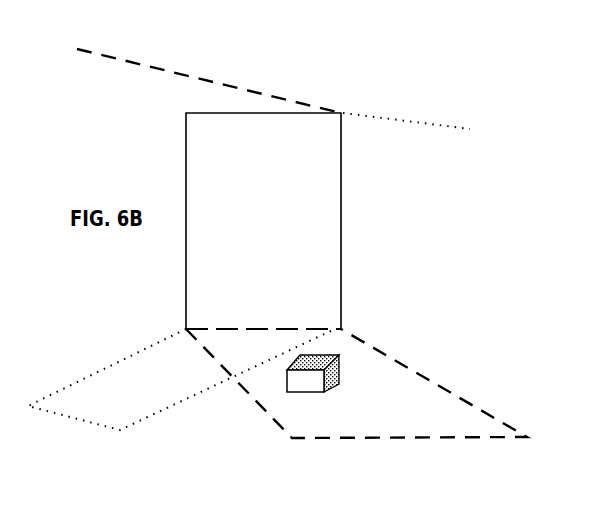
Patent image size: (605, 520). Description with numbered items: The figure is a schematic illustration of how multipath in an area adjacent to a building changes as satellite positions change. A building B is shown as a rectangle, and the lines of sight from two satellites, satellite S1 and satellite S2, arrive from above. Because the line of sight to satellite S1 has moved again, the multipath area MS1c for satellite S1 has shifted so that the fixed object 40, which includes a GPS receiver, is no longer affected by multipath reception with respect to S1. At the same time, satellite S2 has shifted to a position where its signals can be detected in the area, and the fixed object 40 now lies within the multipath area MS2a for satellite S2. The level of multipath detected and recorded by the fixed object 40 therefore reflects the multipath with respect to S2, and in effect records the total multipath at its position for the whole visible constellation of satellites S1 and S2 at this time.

The fixed object 40 is at (313, 373).
The building B is at (263, 221).
The satellite S1 is at (424, 121).
The satellite S2 is at (190, 72).
The multipath area MS1c is at (181, 379).
The multipath area MS2a is at (356, 383).